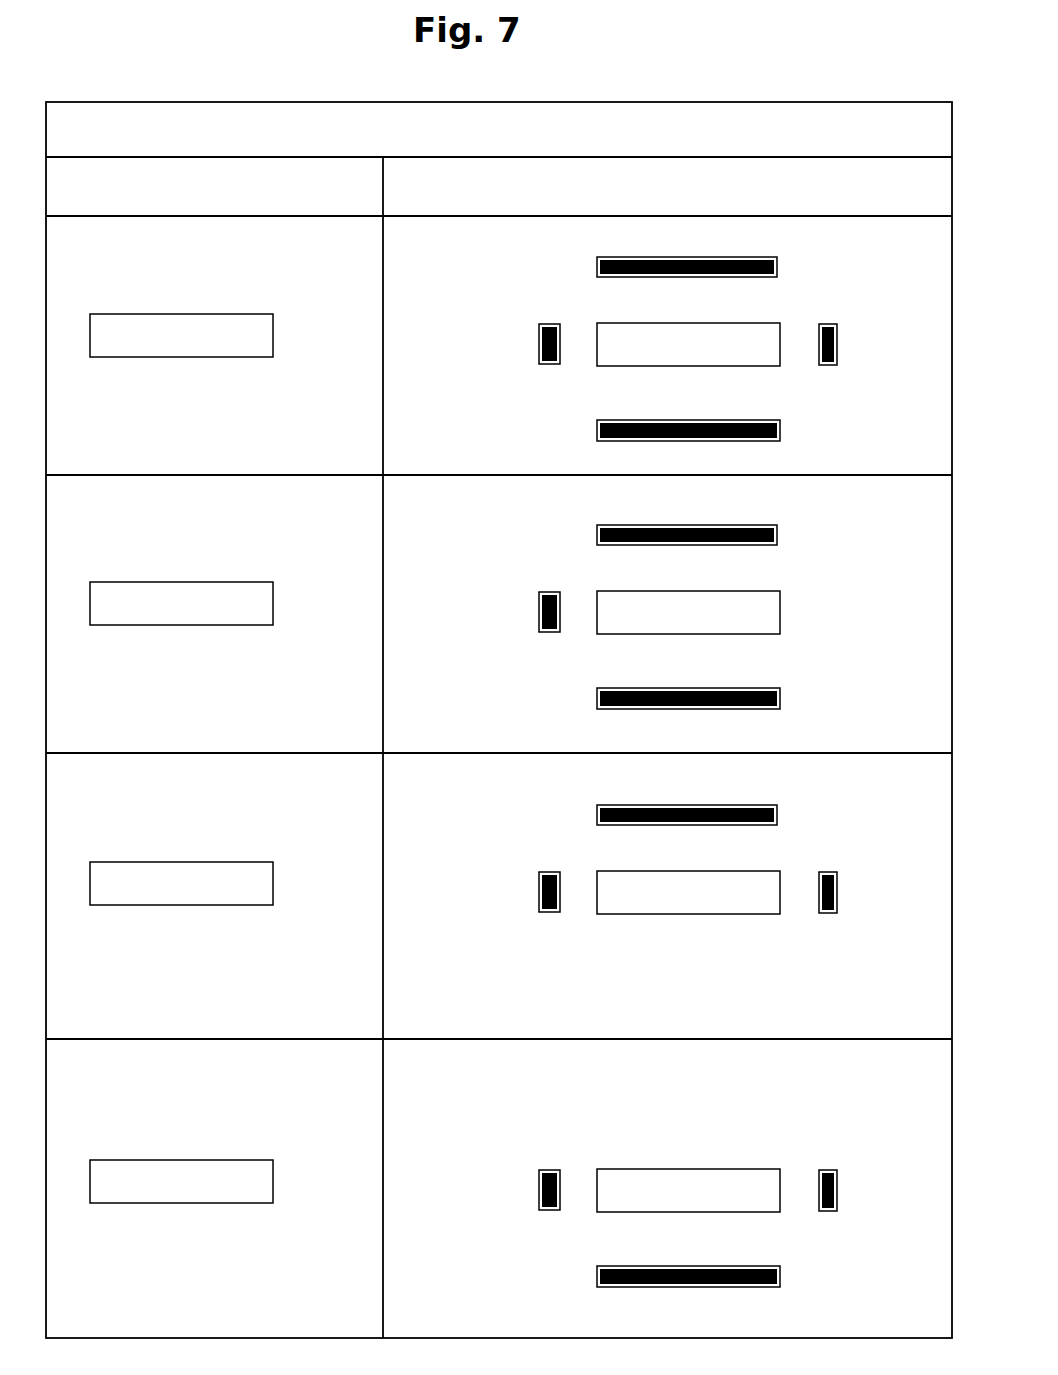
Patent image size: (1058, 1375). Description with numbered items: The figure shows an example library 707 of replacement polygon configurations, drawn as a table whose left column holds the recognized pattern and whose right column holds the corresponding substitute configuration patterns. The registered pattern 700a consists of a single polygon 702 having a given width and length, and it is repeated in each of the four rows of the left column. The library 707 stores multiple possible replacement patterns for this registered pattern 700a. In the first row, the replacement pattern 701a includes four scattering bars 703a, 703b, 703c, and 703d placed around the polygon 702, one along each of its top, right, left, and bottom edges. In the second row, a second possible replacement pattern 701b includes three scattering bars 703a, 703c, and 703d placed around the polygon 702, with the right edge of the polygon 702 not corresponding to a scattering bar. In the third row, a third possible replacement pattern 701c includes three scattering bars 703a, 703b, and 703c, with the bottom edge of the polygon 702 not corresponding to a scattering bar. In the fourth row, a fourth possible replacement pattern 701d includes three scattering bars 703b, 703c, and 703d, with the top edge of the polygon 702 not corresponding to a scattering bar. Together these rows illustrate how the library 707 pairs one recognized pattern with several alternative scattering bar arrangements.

The library 707 is at (499, 720).
The registered pattern 700a is at (246, 397).
The replacement pattern 701a is at (510, 405).
The second replacement pattern 701b is at (463, 687).
The third replacement pattern 701c is at (463, 967).
The fourth replacement pattern 701d is at (463, 1265).
The polygon 702 is at (119, 314).
The scattering bar 703a is at (777, 273).
The scattering bar 703b is at (838, 352).
The scattering bar 703c is at (538, 343).
The scattering bar 703d is at (780, 440).